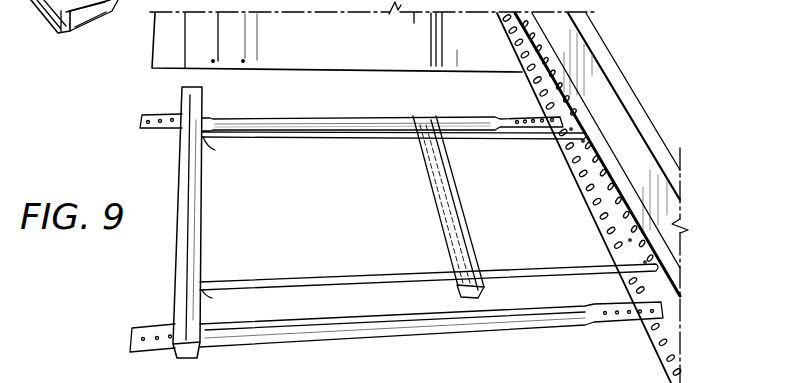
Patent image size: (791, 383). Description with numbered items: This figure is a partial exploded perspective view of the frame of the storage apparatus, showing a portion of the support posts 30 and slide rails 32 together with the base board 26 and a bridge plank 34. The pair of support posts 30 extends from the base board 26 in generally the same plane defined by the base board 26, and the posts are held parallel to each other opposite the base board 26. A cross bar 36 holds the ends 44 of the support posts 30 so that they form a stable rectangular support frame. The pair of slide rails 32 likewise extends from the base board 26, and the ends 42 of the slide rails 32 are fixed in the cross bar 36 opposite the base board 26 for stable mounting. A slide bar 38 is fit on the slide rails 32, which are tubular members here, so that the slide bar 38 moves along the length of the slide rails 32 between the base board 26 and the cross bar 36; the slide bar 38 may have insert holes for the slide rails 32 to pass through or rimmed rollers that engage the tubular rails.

The base board 26 is at (597, 80).
The support posts 30 is at (300, 117).
The slide rails 32 is at (302, 135).
The bridge planks 34 is at (287, 62).
The cross bar 36 is at (195, 218).
The slide bar 38 is at (454, 205).
The ends of the slide rails 42 is at (205, 138).
The ends of the support posts 44 is at (148, 127).